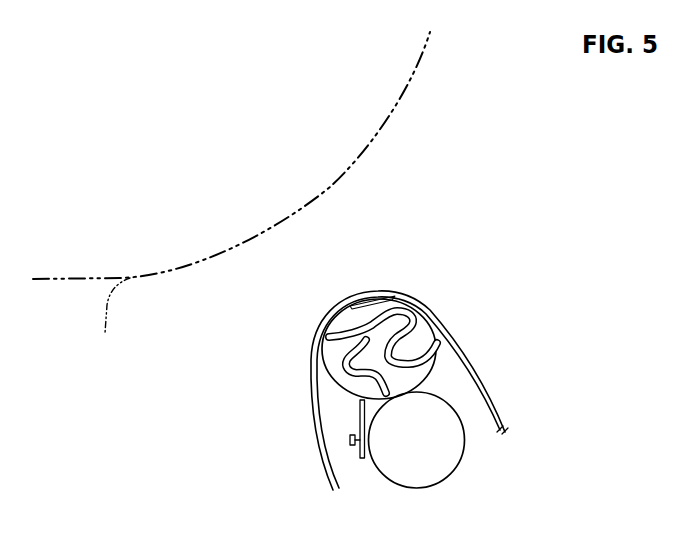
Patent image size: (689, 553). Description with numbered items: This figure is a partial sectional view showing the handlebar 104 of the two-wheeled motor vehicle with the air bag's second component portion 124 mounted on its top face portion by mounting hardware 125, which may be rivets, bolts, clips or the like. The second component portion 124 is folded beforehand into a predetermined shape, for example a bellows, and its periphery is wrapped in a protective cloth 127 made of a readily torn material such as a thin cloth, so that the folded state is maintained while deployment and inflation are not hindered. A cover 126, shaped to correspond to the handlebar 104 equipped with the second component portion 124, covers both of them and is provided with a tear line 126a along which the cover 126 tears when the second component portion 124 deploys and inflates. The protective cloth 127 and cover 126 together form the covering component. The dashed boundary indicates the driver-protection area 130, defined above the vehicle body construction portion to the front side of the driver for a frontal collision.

The handlebar 104 is at (465, 433).
The second component portion 124 is at (417, 318).
The mounting hardware 125 is at (353, 454).
The cover 126 is at (300, 325).
The tear line 126a is at (358, 303).
The protective cloth 127 is at (330, 384).
The driver-protection area 130 is at (231, 204).